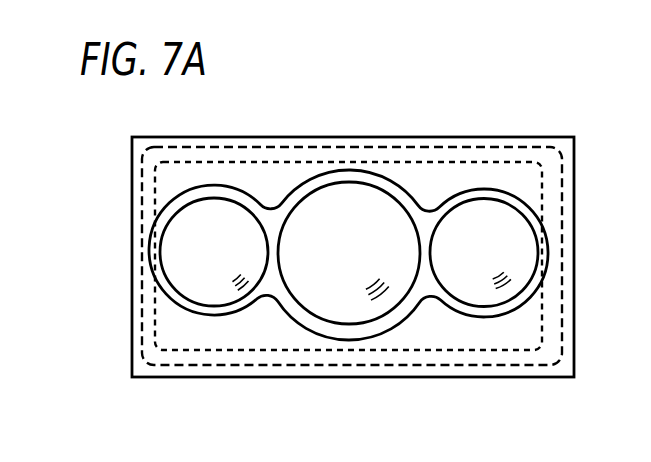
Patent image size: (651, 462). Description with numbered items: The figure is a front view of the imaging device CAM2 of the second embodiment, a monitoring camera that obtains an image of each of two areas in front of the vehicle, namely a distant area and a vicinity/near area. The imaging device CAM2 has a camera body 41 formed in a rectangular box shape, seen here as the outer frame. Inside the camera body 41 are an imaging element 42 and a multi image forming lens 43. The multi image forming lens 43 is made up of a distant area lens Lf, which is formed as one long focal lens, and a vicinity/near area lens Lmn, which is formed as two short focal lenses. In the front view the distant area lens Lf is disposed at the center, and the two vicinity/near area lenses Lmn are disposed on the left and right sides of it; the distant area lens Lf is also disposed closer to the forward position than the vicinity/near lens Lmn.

The camera body 41 is at (355, 137).
The imaging element 42 is at (155, 297).
The multi image forming lens 43 is at (518, 302).
The vicinity/near area lens Lmn is at (213, 283).
The distant area lens Lf is at (352, 307).
The imaging device CAM2 is at (486, 126).